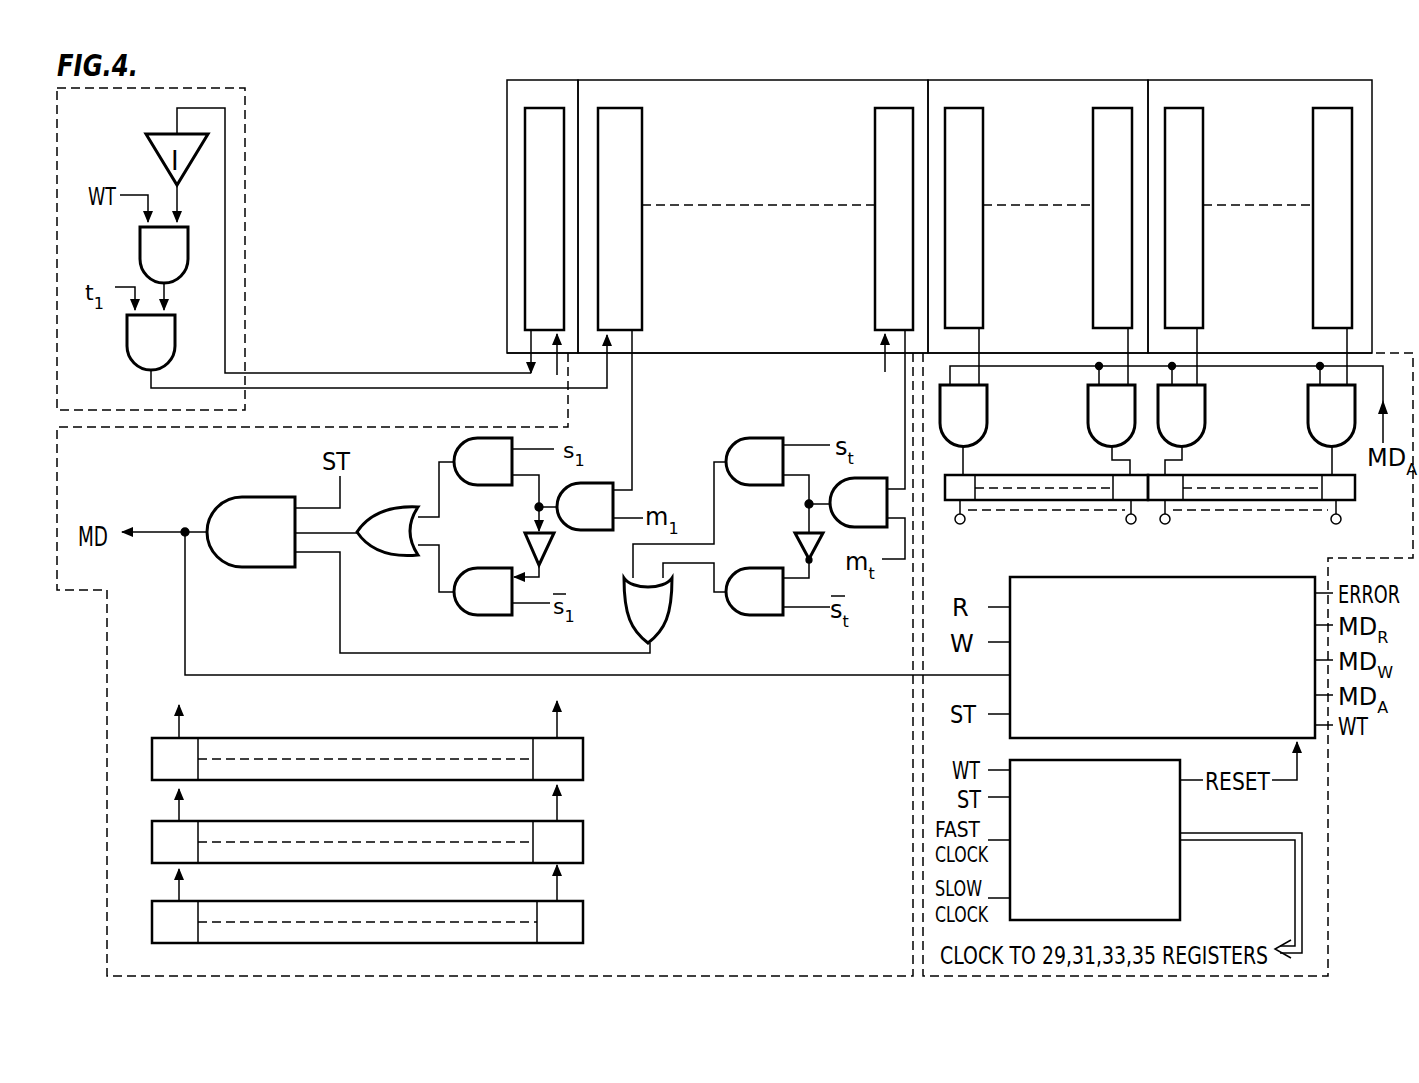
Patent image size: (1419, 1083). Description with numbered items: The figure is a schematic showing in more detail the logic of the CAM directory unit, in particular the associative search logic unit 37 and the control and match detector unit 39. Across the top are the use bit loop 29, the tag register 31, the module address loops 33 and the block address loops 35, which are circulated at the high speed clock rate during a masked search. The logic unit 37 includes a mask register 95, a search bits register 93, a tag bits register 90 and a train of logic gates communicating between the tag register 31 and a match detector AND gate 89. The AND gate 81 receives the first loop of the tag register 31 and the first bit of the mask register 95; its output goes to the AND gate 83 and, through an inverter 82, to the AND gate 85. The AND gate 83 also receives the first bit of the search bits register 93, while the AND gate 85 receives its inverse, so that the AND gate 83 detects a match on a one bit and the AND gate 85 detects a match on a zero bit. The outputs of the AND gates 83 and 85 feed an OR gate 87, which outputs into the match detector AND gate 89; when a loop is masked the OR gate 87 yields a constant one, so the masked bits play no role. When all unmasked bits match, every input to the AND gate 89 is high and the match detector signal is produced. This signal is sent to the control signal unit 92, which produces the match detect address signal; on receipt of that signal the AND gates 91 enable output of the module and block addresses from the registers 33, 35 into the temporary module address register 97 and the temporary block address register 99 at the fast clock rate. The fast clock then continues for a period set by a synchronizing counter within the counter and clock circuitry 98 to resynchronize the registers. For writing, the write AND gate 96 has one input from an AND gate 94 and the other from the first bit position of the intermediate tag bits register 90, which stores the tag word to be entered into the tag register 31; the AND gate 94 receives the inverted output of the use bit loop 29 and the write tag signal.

The use bit loop 29 is at (541, 56).
The tag register 31 is at (775, 56).
The module address loops 33 is at (1114, 56).
The block address loops 35 is at (1321, 56).
The associative search logic unit 37 is at (107, 890).
The control and match detector unit 39 is at (245, 352).
The AND gate 81 is at (574, 520).
The inverter 82 is at (547, 545).
The AND gate 83 is at (471, 475).
The AND gate 85 is at (471, 605).
The OR gate 87 is at (375, 546).
The match detector AND gate 89 is at (237, 549).
The tag bits register 90 is at (583, 919).
The AND gates 91 is at (952, 424).
The control signal unit 92 is at (1215, 715).
The search bits register 93 is at (583, 840).
The AND gate 94 is at (177, 272).
The mask register 95 is at (583, 757).
The write AND gate 96 is at (164, 358).
The temporary module address register 97 is at (1048, 475).
The counter and clock circuitry 98 is at (1118, 900).
The temporary block address register 99 is at (1262, 475).